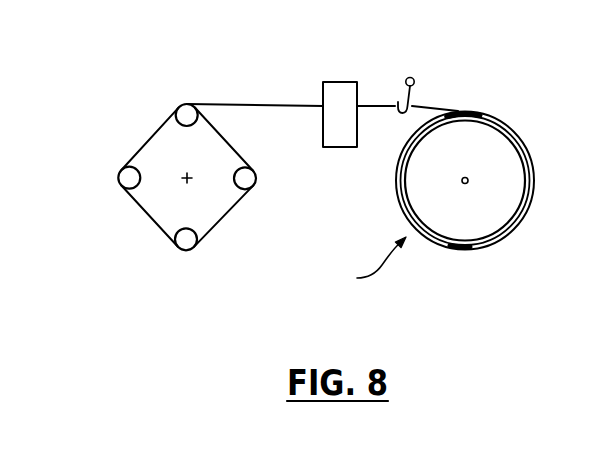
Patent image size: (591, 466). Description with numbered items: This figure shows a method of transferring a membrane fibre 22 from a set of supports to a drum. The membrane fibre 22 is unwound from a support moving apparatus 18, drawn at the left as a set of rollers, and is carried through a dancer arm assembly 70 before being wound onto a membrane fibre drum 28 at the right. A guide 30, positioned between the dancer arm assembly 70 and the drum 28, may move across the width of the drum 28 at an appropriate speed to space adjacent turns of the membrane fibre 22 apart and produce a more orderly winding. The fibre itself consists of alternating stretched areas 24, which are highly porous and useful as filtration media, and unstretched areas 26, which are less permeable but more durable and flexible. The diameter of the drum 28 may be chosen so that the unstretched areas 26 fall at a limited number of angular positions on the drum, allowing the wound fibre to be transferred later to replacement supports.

The support moving apparatus 18 is at (187, 242).
The membrane fibre 22 is at (287, 105).
The dancer arm assembly 70 is at (332, 147).
The guide 30 is at (411, 77).
The unstretched areas 26 is at (470, 107).
The stretched areas 24 is at (510, 123).
The membrane fibre drum 28 is at (363, 265).